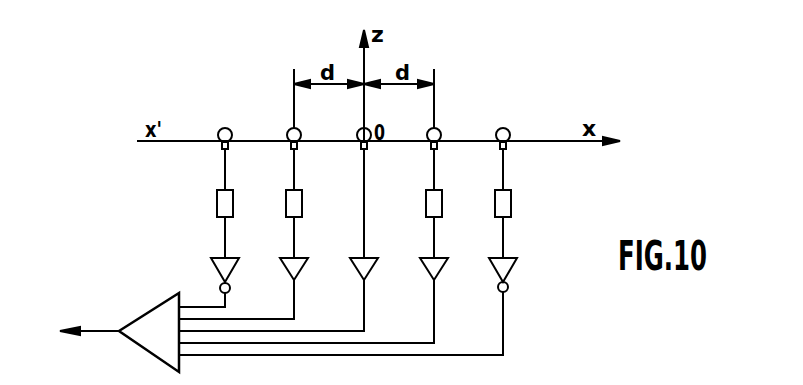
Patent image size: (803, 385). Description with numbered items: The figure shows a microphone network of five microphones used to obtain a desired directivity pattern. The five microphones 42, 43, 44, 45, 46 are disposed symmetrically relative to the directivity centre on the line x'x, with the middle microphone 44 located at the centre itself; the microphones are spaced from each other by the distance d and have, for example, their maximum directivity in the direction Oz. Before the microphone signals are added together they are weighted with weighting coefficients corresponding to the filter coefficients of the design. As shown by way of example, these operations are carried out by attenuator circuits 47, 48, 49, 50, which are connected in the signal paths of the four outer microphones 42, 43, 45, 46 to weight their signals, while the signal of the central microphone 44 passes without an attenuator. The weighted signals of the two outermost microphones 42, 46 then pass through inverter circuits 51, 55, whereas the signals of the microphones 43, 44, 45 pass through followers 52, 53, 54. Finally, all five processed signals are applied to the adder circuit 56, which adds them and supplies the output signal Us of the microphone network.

The microphone 42 is at (224, 128).
The microphone 43 is at (287, 134).
The microphone 44 is at (357, 134).
The microphone 45 is at (441, 134).
The microphone 46 is at (497, 131).
The attenuator circuit 47 is at (217, 205).
The attenuator circuit 48 is at (286, 205).
The attenuator circuit 49 is at (426, 207).
The attenuator circuit 50 is at (495, 205).
The inverter circuit 51 is at (214, 270).
The follower 52 is at (284, 270).
The follower 53 is at (356, 272).
The follower 54 is at (442, 272).
The inverter circuit 55 is at (512, 274).
The adder circuit 56 is at (171, 312).